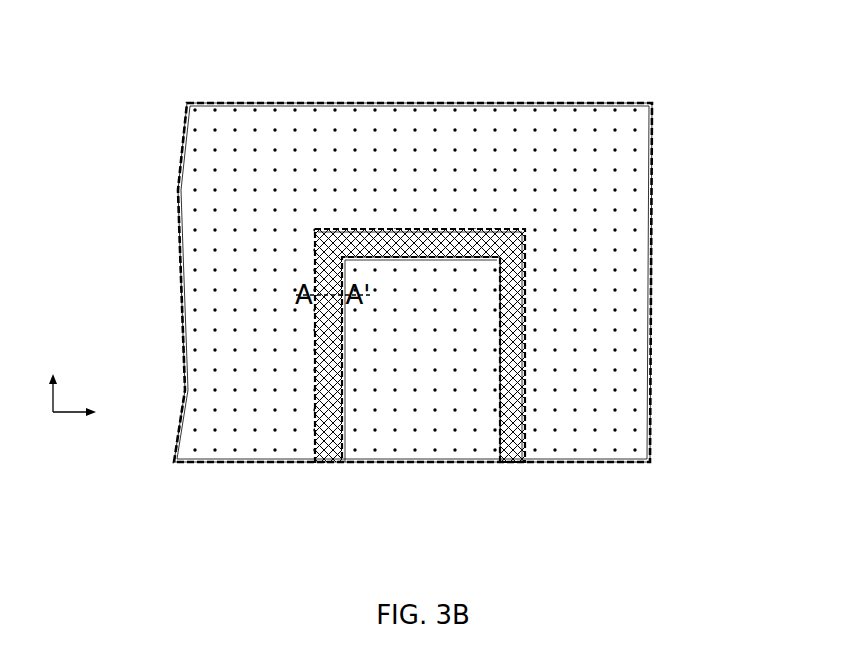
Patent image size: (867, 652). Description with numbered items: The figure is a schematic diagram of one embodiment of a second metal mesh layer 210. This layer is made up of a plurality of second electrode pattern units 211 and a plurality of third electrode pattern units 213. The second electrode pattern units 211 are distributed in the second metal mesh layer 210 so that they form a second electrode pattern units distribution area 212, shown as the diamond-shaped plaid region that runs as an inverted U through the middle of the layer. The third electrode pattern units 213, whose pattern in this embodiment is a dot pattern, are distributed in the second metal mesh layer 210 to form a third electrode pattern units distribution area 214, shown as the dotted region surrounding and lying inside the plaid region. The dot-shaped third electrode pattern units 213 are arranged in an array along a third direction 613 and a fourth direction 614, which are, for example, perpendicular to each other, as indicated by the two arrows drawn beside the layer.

The second metal mesh layer 210 is at (174, 59).
The second electrode pattern units 211 is at (525, 427).
The second electrode pattern units distribution area 212 is at (524, 383).
The third electrode pattern units 213 is at (613, 128).
The third electrode pattern units distribution area 214 is at (307, 103).
The third direction 613 is at (98, 417).
The fourth direction 614 is at (55, 378).